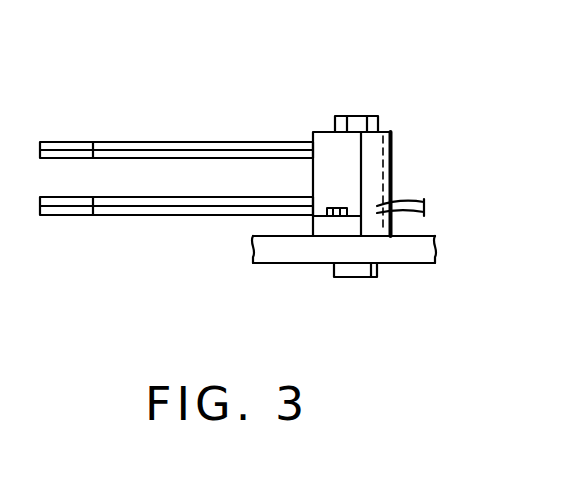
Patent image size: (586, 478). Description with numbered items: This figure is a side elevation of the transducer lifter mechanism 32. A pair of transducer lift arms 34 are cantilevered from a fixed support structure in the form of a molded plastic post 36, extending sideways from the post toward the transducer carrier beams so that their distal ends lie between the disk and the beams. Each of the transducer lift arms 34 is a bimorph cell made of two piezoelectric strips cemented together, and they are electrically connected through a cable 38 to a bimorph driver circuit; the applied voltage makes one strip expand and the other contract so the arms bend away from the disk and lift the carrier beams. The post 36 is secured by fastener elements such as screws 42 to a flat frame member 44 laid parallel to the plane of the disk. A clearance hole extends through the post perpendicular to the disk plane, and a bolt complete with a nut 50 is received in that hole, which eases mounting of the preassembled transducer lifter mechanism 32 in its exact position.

The transducer lifter mechanism 32 is at (50, 238).
The transducer lift arms 34 is at (130, 141).
The post 36 is at (393, 140).
The cable 38 is at (405, 204).
The screws 42 is at (325, 208).
The flat frame member 44 is at (405, 258).
The nut 50 is at (353, 115).